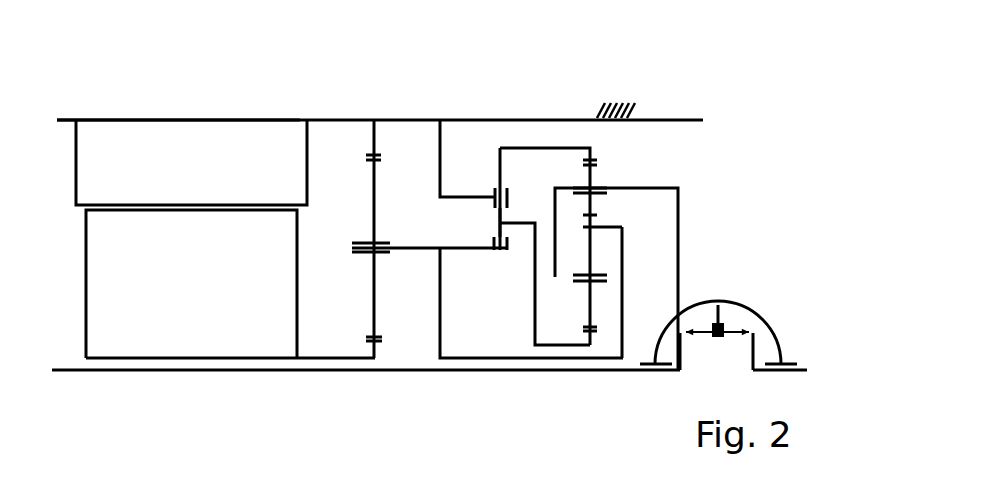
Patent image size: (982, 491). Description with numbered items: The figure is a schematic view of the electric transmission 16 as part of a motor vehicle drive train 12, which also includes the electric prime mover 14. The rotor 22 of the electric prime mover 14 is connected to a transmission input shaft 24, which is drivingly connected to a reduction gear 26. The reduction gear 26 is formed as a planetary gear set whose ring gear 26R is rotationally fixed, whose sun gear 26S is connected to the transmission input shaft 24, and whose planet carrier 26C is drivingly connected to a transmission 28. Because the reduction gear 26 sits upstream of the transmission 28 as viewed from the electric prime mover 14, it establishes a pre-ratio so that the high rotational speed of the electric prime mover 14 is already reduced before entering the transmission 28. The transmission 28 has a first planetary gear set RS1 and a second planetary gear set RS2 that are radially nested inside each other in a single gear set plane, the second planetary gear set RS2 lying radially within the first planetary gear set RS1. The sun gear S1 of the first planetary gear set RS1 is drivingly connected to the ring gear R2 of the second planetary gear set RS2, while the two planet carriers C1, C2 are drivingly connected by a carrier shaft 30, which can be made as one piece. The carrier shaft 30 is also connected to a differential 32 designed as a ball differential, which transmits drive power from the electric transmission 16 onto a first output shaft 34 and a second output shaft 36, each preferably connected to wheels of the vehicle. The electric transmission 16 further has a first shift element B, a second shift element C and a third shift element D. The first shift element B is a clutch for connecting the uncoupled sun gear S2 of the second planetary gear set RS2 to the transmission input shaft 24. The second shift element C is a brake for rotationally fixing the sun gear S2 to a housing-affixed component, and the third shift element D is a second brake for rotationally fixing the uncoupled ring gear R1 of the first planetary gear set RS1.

The motor vehicle drive train 12 is at (240, 78).
The electric prime mover 14 is at (110, 103).
The electric transmission 16 is at (212, 87).
The rotor 22 is at (163, 358).
The transmission input shaft 24 is at (325, 358).
The reduction gear 26 is at (374, 385).
The ring gear 26R is at (372, 152).
The planet carrier 26C is at (352, 243).
The sun gear 26S is at (380, 343).
The transmission 28 is at (582, 382).
The carrier shaft 30 is at (660, 187).
The differential 32 is at (764, 305).
The first output shaft 34 is at (217, 370).
The second output shaft 36 is at (795, 372).
The first shift element B is at (481, 235).
The second shift element C is at (490, 218).
The third shift element D is at (492, 183).
The ring gear R1 is at (594, 155).
The planet carrier C1 is at (607, 188).
The sun gear S1 is at (598, 222).
The ring gear R2 is at (596, 227).
The planet carrier C2 is at (573, 277).
The sun gear S2 is at (590, 345).
The first planetary gear set RS1 is at (585, 110).
The second planetary gear set RS2 is at (613, 383).